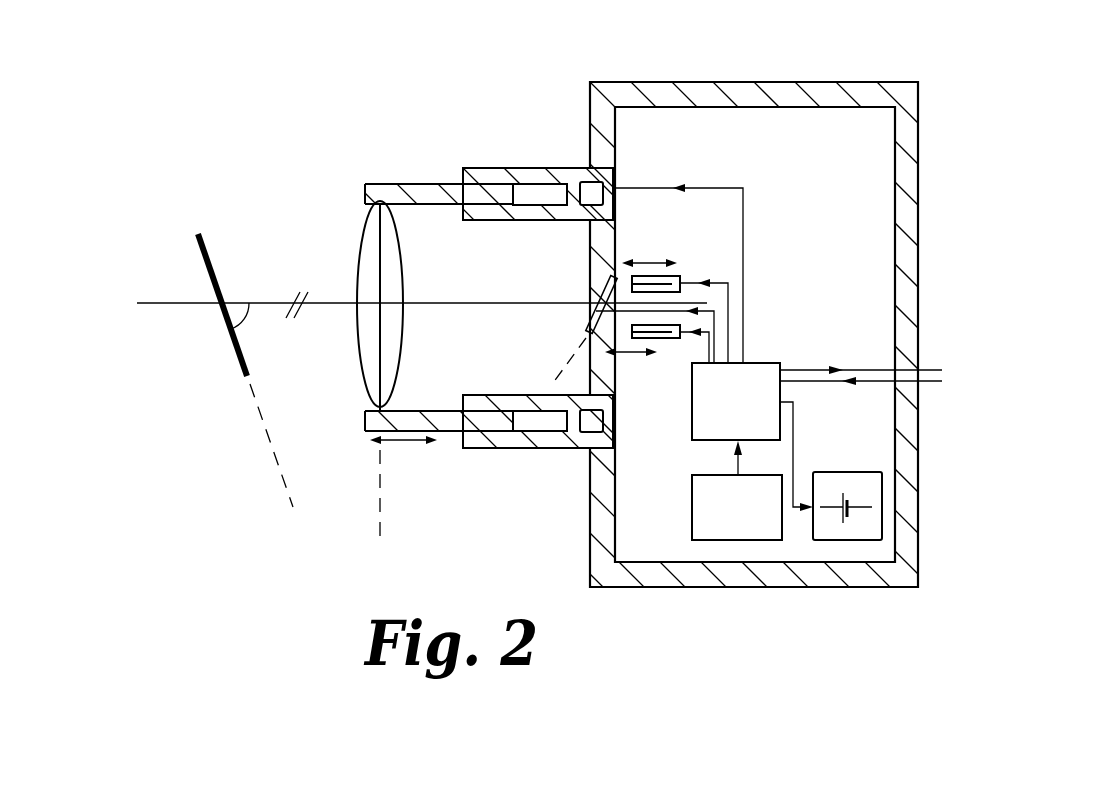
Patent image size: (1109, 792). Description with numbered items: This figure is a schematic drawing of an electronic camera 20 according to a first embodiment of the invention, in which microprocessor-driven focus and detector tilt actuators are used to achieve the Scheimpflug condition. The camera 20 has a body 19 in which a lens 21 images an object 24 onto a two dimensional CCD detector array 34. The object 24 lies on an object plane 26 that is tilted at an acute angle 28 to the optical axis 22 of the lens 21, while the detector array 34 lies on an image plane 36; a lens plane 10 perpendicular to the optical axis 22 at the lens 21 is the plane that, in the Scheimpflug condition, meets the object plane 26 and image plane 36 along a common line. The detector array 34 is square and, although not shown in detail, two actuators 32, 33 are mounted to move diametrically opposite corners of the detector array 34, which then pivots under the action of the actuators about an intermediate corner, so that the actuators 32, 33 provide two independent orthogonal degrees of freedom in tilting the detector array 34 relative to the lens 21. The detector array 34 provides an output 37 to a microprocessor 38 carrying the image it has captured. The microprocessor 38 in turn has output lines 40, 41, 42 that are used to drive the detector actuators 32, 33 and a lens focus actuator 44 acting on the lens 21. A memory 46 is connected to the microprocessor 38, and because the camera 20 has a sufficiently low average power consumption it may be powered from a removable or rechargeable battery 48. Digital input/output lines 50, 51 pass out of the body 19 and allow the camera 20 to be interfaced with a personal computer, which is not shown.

The lens plane 10 is at (382, 488).
The body 19 is at (733, 82).
The electronic camera 20 is at (372, 140).
The lens 21 is at (367, 225).
The optical axis 22 is at (155, 303).
The object 24 is at (208, 233).
The object plane 26 is at (273, 460).
The acute angle 28 is at (245, 323).
The detector actuator 32 is at (680, 275).
The detector actuator 33 is at (677, 342).
The two dimensional CCD detector array 34 is at (606, 284).
The image plane 36 is at (565, 378).
The output 37 is at (714, 308).
The microprocessor 38 is at (758, 362).
The output line 40 is at (692, 334).
The output line 41 is at (722, 282).
The output line 42 is at (744, 198).
The lens focus actuator 44 is at (592, 181).
The memory 46 is at (740, 540).
The battery 48 is at (882, 503).
The digital input/output line 50 is at (932, 382).
The digital input/output line 51 is at (930, 370).